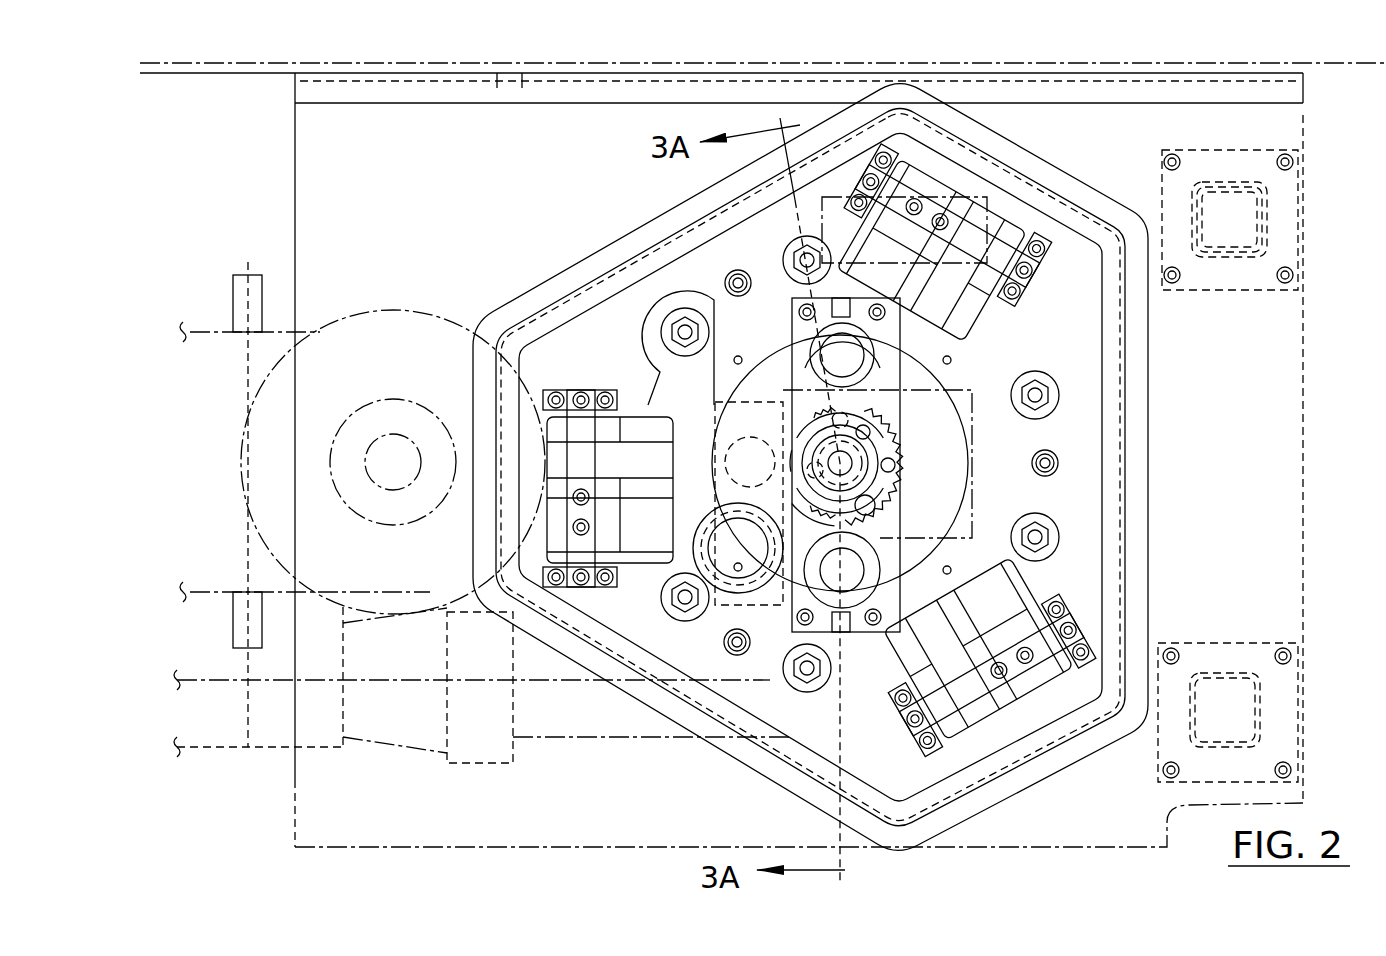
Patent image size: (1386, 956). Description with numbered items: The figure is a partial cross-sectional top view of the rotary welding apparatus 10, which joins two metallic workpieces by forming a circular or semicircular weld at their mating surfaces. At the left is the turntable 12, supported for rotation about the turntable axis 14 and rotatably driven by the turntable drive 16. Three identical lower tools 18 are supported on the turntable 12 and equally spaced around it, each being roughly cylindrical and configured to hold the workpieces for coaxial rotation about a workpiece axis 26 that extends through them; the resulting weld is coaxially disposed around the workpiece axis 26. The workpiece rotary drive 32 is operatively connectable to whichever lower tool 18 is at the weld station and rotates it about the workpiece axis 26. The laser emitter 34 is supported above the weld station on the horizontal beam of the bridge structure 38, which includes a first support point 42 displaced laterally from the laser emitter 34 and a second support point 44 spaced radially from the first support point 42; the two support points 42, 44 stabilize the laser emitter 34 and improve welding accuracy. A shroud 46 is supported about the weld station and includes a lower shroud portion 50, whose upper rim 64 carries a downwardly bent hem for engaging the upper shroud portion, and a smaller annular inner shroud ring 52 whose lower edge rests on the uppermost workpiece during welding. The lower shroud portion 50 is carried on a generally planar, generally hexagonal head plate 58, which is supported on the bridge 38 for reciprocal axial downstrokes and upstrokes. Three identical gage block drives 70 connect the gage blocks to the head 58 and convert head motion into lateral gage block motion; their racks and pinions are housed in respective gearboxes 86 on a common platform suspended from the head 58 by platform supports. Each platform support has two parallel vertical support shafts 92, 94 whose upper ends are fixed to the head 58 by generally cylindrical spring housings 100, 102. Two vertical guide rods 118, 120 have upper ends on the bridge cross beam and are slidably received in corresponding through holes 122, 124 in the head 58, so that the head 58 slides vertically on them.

The rotary welding apparatus 10 is at (212, 134).
The turntable 12 is at (1103, 827).
The turntable axis 14 is at (393, 462).
The turntable drive 16 is at (257, 487).
The lower tool 18 is at (930, 455).
The workpiece axis 26 is at (838, 460).
The workpiece rotary drive 32 is at (565, 732).
The laser emitter 34 is at (738, 594).
The bridge structure 38 is at (1254, 178).
The first support point 42 is at (1285, 727).
The second support point 44 is at (1213, 182).
The shroud 46 is at (1050, 178).
The lower shroud portion 50 is at (868, 132).
The inner shroud ring 52 is at (985, 450).
The head plate 58 is at (567, 337).
The upper rim 64 is at (1112, 373).
The gage block drive 70 is at (855, 222).
The gearbox 86 is at (603, 517).
The support shaft 92 is at (676, 331).
The support shaft 94 is at (800, 265).
The spring housing 100 is at (668, 343).
The spring housing 102 is at (793, 290).
The guide rod 118 is at (905, 493).
The guide rod 120 is at (858, 350).
The through hole 122 is at (856, 592).
The through hole 124 is at (857, 372).